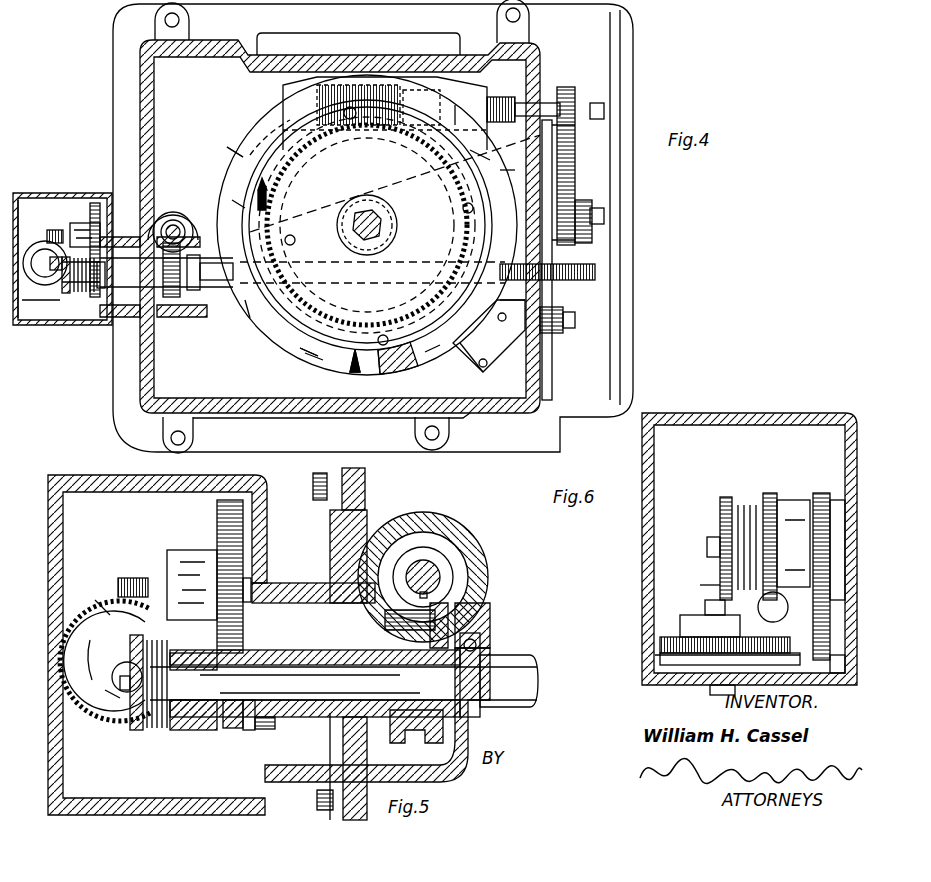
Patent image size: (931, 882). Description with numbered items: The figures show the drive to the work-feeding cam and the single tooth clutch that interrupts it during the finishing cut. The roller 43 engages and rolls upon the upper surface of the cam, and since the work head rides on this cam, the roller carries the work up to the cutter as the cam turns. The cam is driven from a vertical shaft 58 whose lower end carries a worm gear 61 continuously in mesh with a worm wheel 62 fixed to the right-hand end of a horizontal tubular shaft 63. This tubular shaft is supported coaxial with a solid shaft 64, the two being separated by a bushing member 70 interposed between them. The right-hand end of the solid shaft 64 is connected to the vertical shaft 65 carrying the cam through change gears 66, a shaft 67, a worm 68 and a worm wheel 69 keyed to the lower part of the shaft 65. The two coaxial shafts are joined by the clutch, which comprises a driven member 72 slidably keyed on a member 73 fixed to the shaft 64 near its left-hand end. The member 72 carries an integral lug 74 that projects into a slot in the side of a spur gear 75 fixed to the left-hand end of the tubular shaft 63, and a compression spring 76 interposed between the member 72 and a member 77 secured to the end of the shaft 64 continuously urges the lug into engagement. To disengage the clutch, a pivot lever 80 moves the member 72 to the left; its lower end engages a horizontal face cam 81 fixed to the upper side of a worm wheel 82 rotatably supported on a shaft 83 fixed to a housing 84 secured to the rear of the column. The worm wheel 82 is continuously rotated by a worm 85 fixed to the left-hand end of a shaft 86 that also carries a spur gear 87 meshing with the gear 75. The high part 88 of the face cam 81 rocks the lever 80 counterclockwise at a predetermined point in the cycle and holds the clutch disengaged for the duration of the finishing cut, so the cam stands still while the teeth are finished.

In FIG. 4, the roller 43 is at (452, 193).
In FIG. 4, the vertical shaft 58 is at (178, 215).
In FIG. 5, the vertical shaft 58 is at (440, 573).
In FIG. 4, the worm gear 61 is at (190, 225).
In FIG. 5, the worm gear 61 is at (455, 585).
In FIG. 4, the worm wheel 62 is at (173, 317).
In FIG. 5, the worm wheel 62 is at (470, 600).
In FIG. 4, the horizontal tubular shaft 63 is at (147, 277).
In FIG. 5, the horizontal tubular shaft 63 is at (345, 650).
In FIG. 4, the solid shaft 64 is at (223, 297).
In FIG. 5, the solid shaft 64 is at (520, 680).
In FIG. 4, the vertical shaft 65 is at (380, 228).
In FIG. 4, the change gears 66 is at (577, 195).
In FIG. 4, the shaft 67 is at (543, 110).
In FIG. 4, the worm 68 is at (384, 80).
In FIG. 4, the worm wheel 69 is at (240, 147).
In FIG. 5, the bushing member 70 is at (370, 712).
In FIG. 5, the driven member 72 is at (190, 732).
In FIG. 6, the driven member 72 is at (780, 505).
In FIG. 5, the member 73 is at (228, 732).
In FIG. 5, the lug 74 is at (243, 732).
In FIG. 6, the lug 74 is at (812, 545).
In FIG. 4, the spur gear 75 is at (100, 303).
In FIG. 5, the spur gear 75 is at (262, 735).
In FIG. 6, the spur gear 75 is at (825, 492).
In FIG. 4, the compression spring 76 is at (66, 292).
In FIG. 5, the compression spring 76 is at (160, 732).
In FIG. 6, the compression spring 76 is at (750, 505).
In FIG. 4, the member 77 is at (66, 303).
In FIG. 5, the member 77 is at (138, 732).
In FIG. 6, the member 77 is at (722, 505).
In FIG. 6, the pivot lever 80 is at (737, 632).
In FIG. 4, the horizontal face cam 81 is at (37, 290).
In FIG. 5, the horizontal face cam 81 is at (75, 670).
In FIG. 6, the horizontal face cam 81 is at (675, 630).
In FIG. 5, the worm wheel 82 is at (95, 720).
In FIG. 6, the worm wheel 82 is at (648, 658).
In FIG. 6, the shaft 83 is at (705, 680).
In FIG. 4, the housing 84 is at (47, 192).
In FIG. 5, the housing 84 is at (85, 475).
In FIG. 4, the worm 85 is at (43, 240).
In FIG. 5, the worm 85 is at (133, 578).
In FIG. 4, the shaft 86 is at (80, 227).
In FIG. 5, the shaft 86 is at (170, 575).
In FIG. 4, the spur gear 87 is at (97, 203).
In FIG. 5, the spur gear 87 is at (218, 520).
In FIG. 6, the spur gear 87 is at (838, 685).
In FIG. 4, the high part 88 is at (12, 227).
In FIG. 5, the high part 88 is at (95, 600).